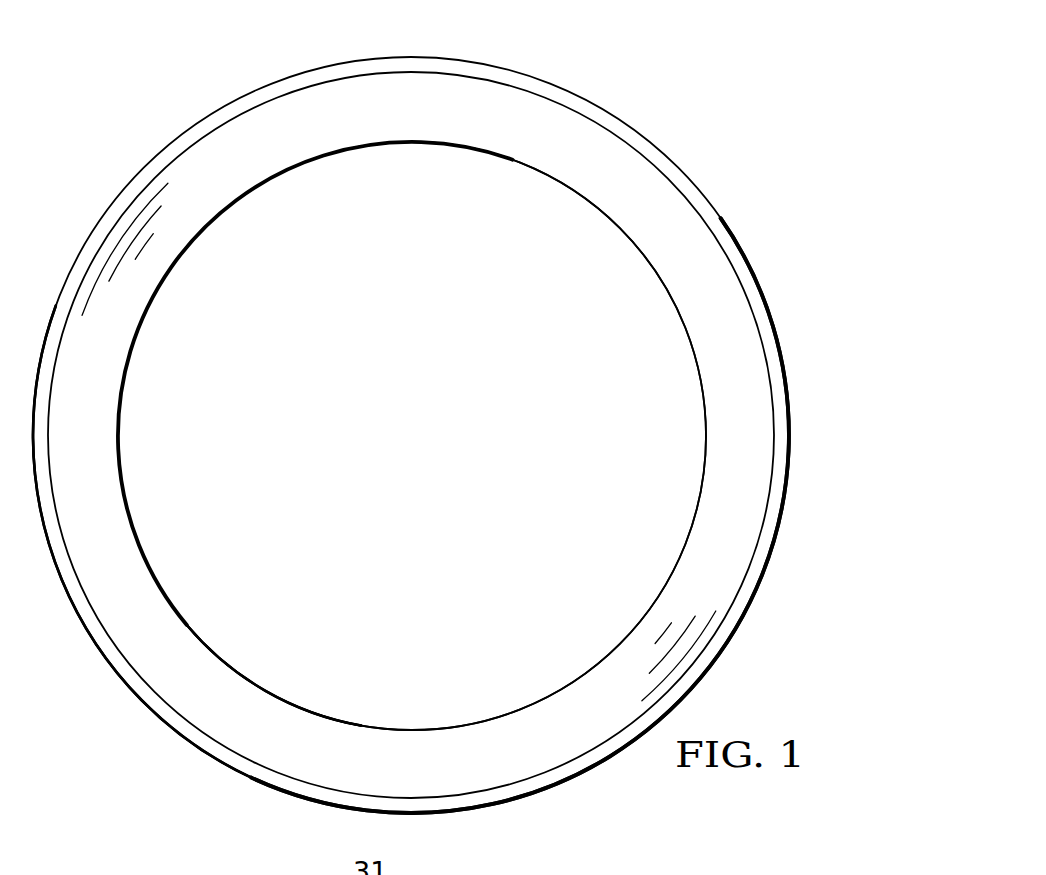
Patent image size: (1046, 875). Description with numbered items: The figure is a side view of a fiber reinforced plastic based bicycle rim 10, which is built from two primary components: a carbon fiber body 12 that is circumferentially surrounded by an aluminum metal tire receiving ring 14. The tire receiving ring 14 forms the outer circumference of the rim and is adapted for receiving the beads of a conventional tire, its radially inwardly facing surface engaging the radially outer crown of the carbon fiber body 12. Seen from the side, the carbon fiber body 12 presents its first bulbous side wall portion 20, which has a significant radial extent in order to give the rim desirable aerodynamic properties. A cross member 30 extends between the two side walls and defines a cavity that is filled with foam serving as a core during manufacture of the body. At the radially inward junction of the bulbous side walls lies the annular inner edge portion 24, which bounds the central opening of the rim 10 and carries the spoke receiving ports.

The FRP based bicycle rim 10 is at (717, 82).
The carbon fiber body 12 is at (410, 180).
The tire receiving ring 14 is at (625, 100).
The first bulbous side wall portion 20 is at (224, 437).
The annular inner edge portion 24 is at (217, 218).
The cross member 30 is at (229, 120).